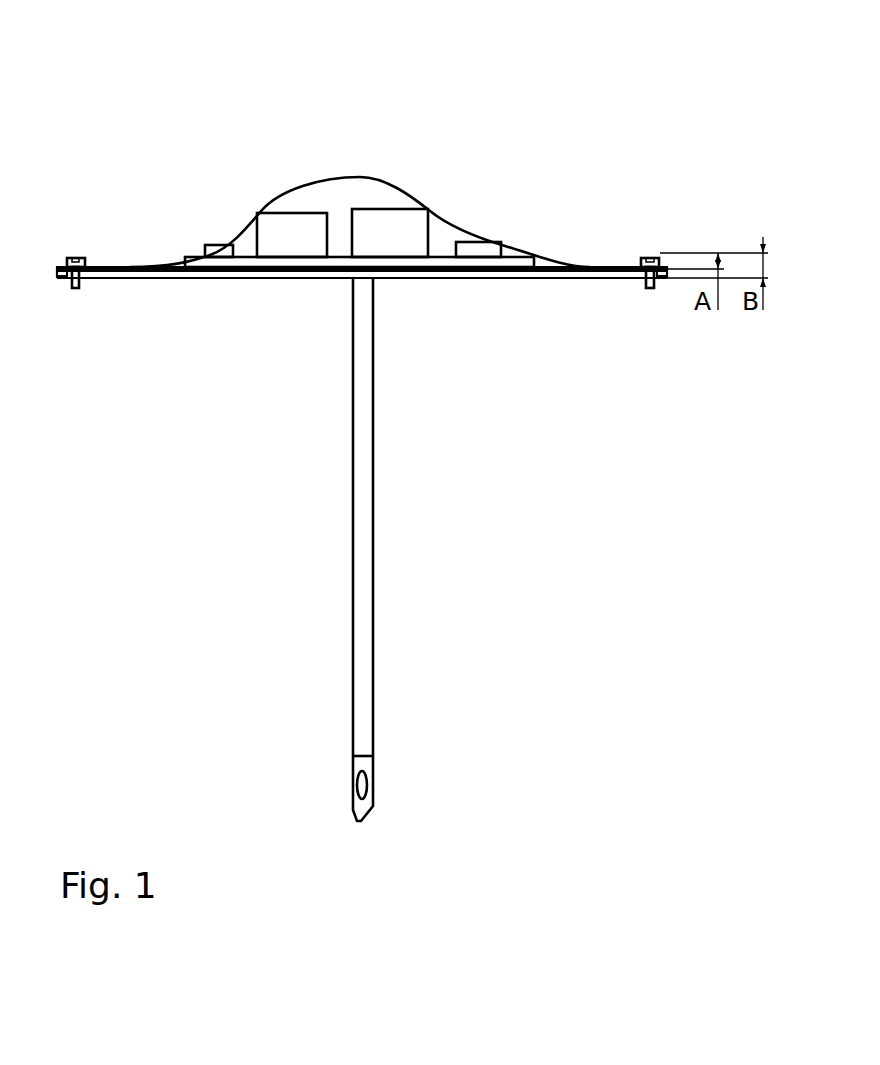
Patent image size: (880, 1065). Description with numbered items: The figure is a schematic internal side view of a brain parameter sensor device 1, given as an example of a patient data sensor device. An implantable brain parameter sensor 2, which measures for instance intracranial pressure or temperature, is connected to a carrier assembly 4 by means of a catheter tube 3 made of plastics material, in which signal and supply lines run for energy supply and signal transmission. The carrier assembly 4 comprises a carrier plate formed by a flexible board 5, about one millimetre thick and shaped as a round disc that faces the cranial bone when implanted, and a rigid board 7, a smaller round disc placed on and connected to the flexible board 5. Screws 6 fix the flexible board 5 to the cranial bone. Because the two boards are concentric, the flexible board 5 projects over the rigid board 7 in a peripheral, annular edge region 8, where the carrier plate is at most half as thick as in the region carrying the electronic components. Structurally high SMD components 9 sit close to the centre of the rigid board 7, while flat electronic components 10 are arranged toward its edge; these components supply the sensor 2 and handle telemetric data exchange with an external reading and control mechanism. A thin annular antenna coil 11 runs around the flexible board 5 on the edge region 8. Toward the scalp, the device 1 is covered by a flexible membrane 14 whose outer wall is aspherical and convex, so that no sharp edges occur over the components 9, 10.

The brain parameter sensor device 1 is at (510, 138).
The implantable brain parameter sensor 2 is at (367, 785).
The catheter tube 3 is at (367, 504).
The carrier assembly 4 is at (259, 188).
The flexible board 5 is at (212, 279).
The screws 6 is at (75, 290).
The rigid board 7 is at (447, 262).
The edge region 8 is at (607, 274).
The SMD components 9 is at (305, 220).
The flat electronic components 10 is at (477, 250).
The antenna coil 11 is at (619, 262).
The flexible membrane 14 is at (347, 177).